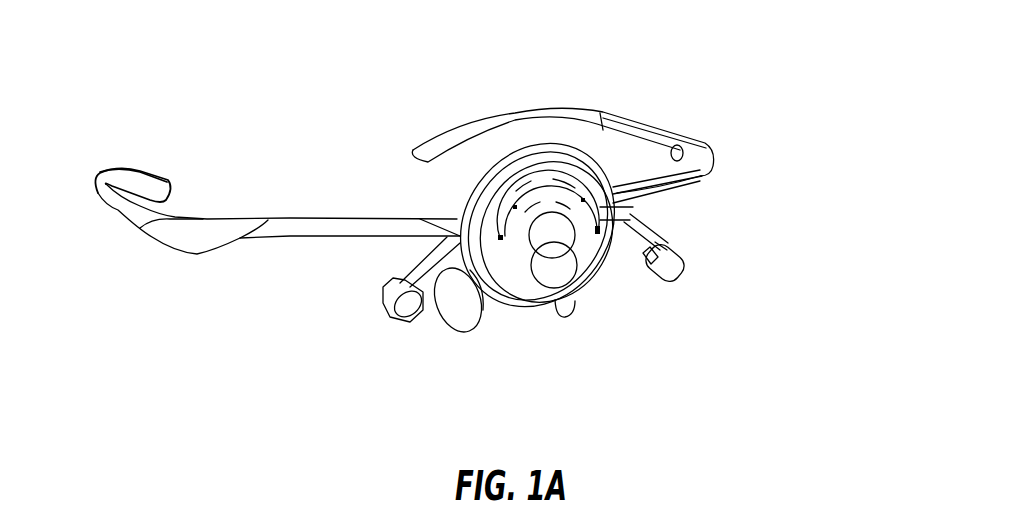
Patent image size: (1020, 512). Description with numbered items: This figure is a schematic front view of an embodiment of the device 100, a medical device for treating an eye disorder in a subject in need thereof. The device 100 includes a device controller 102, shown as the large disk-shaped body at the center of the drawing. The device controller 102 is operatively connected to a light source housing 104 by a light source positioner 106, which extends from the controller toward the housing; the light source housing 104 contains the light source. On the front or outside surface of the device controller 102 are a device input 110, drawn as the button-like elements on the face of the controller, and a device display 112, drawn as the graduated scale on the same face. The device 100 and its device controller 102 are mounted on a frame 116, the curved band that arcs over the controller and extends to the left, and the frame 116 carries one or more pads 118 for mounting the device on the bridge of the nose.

The device 100 is at (825, 78).
The device controller 102 is at (607, 210).
The light source housing 104 is at (677, 270).
The light source positioner 106 is at (657, 247).
The device input 110 is at (553, 272).
The device display 112 is at (526, 187).
The frame 116 is at (657, 125).
The pad 118 is at (465, 322).